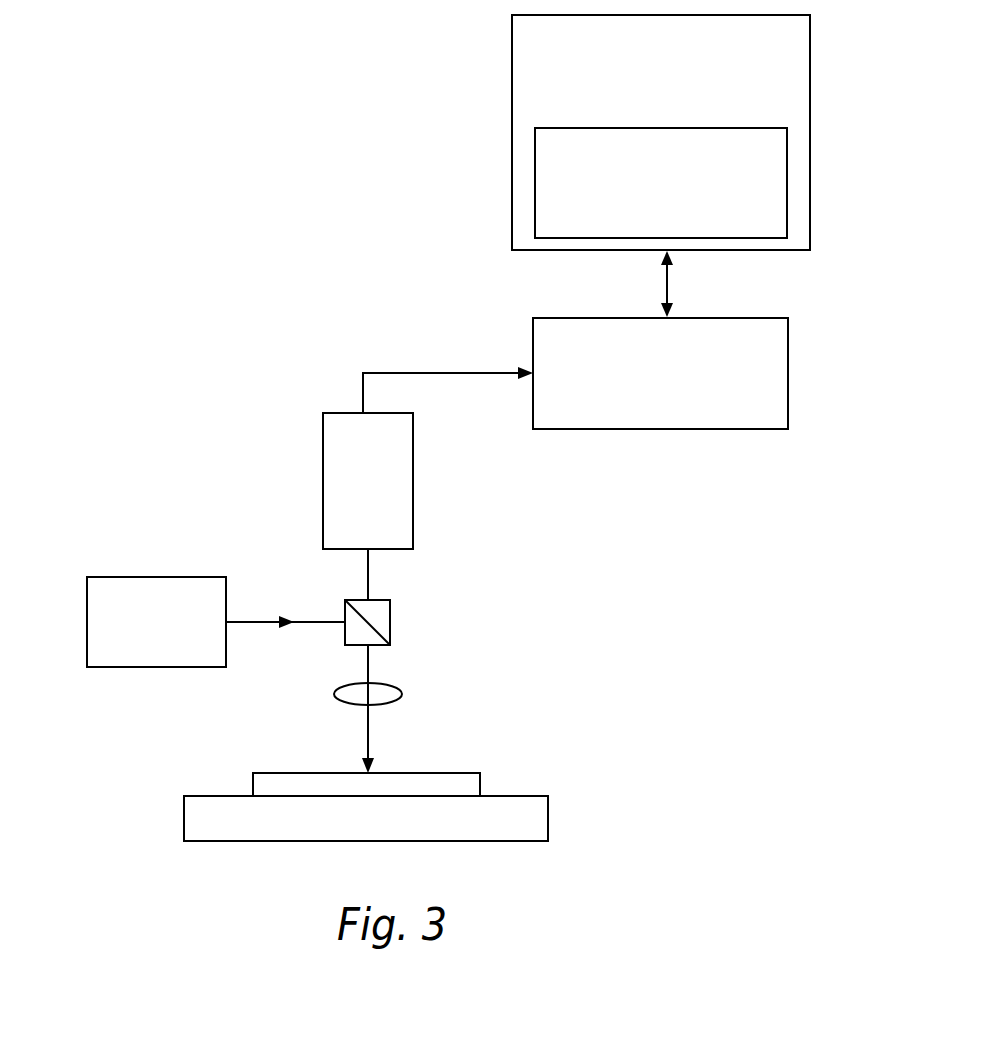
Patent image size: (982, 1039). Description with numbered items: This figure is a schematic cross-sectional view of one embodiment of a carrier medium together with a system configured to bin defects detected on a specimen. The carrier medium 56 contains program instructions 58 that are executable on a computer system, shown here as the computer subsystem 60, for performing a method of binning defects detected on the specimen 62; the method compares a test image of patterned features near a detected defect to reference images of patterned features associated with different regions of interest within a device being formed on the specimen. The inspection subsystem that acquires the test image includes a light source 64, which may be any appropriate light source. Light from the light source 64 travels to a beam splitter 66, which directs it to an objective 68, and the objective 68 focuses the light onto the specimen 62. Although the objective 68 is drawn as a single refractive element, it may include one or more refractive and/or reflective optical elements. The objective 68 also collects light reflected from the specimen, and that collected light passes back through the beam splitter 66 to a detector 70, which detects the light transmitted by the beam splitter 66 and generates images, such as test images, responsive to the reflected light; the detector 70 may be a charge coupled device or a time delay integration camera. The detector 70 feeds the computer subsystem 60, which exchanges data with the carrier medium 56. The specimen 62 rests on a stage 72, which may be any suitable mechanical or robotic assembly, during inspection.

The carrier medium 56 is at (810, 36).
The program instructions 58 is at (787, 172).
The computer subsystem 60 is at (788, 374).
The specimen 62 is at (480, 773).
The light source 64 is at (87, 618).
The beam splitter 66 is at (390, 622).
The objective 68 is at (347, 685).
The detector 70 is at (323, 482).
The stage 72 is at (548, 820).